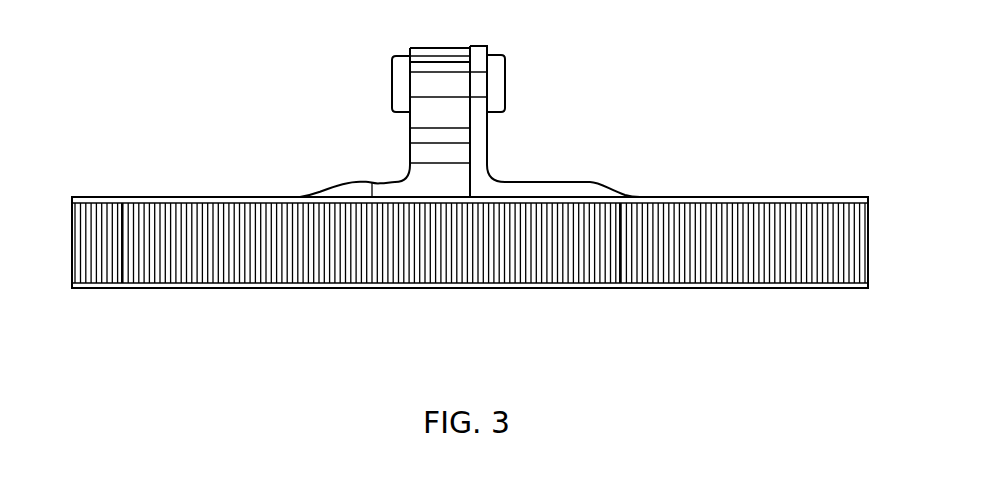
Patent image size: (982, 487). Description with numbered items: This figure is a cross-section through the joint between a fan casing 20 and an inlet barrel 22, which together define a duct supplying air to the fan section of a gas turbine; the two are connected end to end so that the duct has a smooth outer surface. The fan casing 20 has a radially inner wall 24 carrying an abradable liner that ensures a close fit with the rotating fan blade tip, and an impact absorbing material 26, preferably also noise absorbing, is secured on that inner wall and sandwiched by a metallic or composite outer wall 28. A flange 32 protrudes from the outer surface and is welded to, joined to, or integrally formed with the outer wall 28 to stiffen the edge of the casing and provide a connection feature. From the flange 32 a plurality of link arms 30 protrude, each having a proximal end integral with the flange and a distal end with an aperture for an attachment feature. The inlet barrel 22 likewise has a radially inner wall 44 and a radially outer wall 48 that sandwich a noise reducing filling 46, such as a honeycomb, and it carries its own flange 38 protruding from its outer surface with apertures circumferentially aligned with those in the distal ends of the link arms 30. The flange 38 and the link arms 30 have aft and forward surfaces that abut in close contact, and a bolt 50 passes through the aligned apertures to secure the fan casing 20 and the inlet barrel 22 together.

The fan casing 20 is at (293, 303).
The inlet barrel 22 is at (685, 300).
The radially inner wall 24 is at (105, 288).
The impact absorbing material 26 is at (125, 272).
The outer wall 28 is at (110, 197).
The link arms 30 is at (416, 135).
The flange 32 is at (402, 187).
The flange 38 is at (486, 130).
The radially inner wall 44 is at (805, 288).
The noise reducing filling 46 is at (630, 272).
The radially outer wall 48 is at (797, 197).
The bolt 50 is at (392, 70).